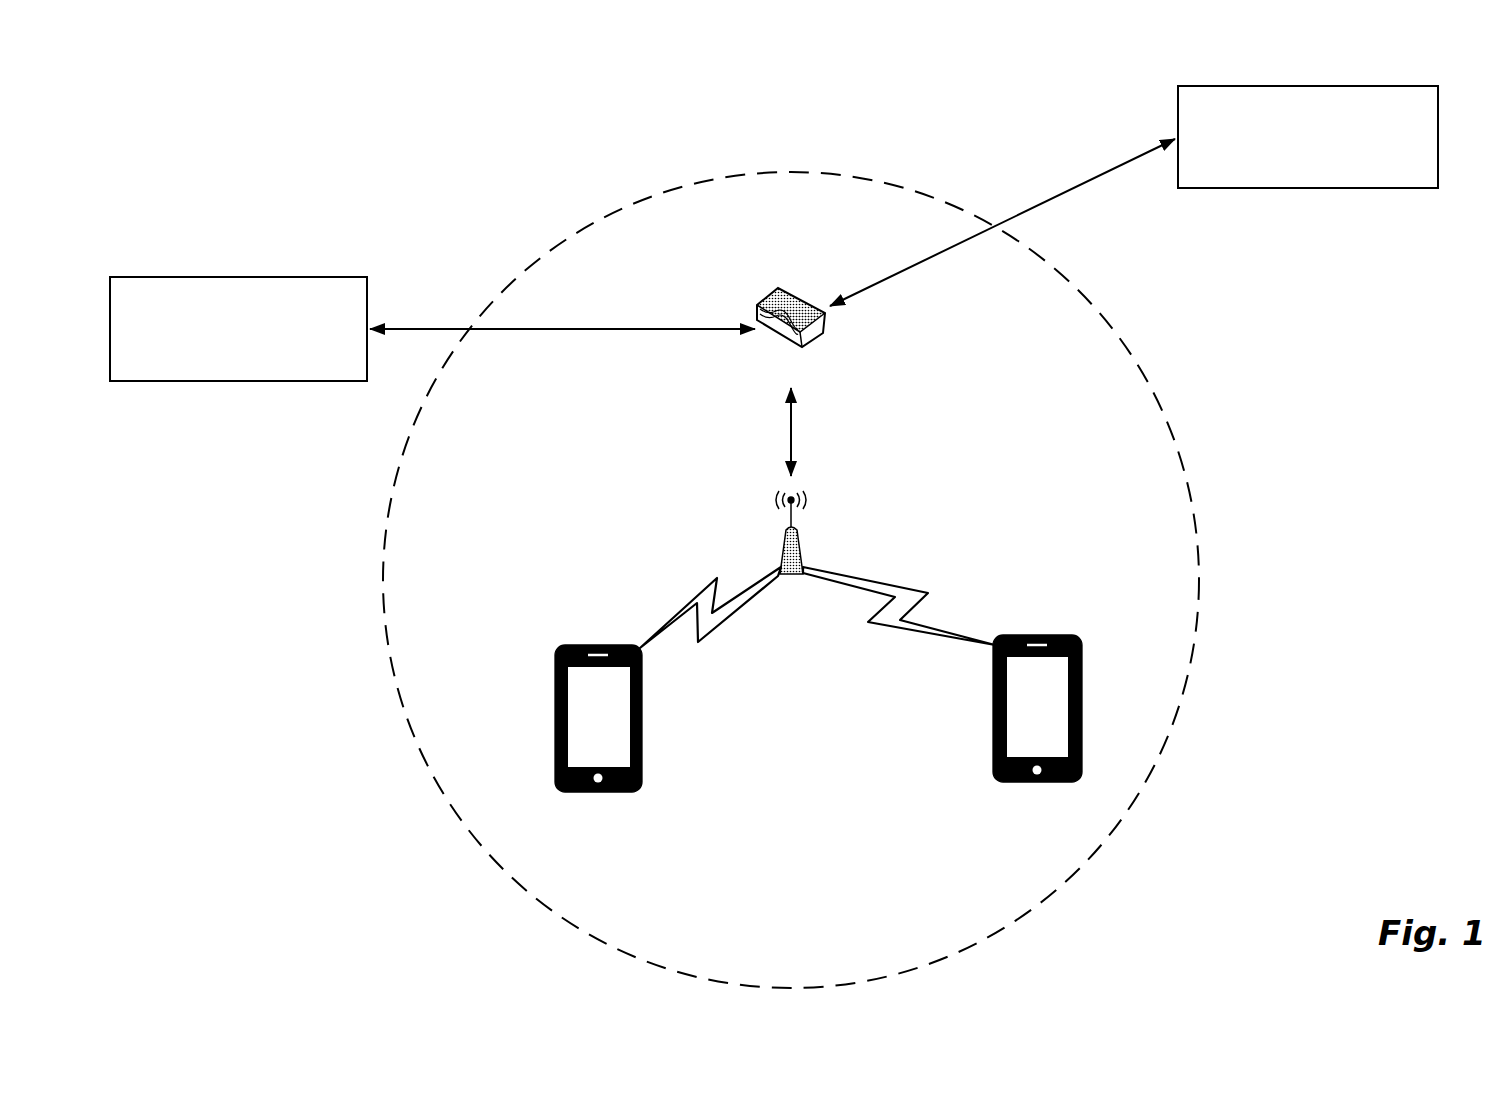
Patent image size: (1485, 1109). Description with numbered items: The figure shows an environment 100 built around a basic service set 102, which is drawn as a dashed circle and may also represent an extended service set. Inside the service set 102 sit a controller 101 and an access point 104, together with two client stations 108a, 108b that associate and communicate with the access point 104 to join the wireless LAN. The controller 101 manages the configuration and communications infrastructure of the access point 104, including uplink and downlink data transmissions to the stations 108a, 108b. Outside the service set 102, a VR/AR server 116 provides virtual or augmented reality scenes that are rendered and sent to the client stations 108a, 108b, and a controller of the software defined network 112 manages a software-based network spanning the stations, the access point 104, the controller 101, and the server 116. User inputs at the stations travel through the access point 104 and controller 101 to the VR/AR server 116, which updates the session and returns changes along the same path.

The environment 100 is at (214, 129).
The controller 101 is at (746, 294).
The basic service set 102 is at (781, 169).
The access point 104 is at (812, 530).
The client station 108a is at (1084, 771).
The client station 108b is at (544, 792).
The software defined network controller 112 is at (240, 273).
The VR/AR server 116 is at (1295, 192).